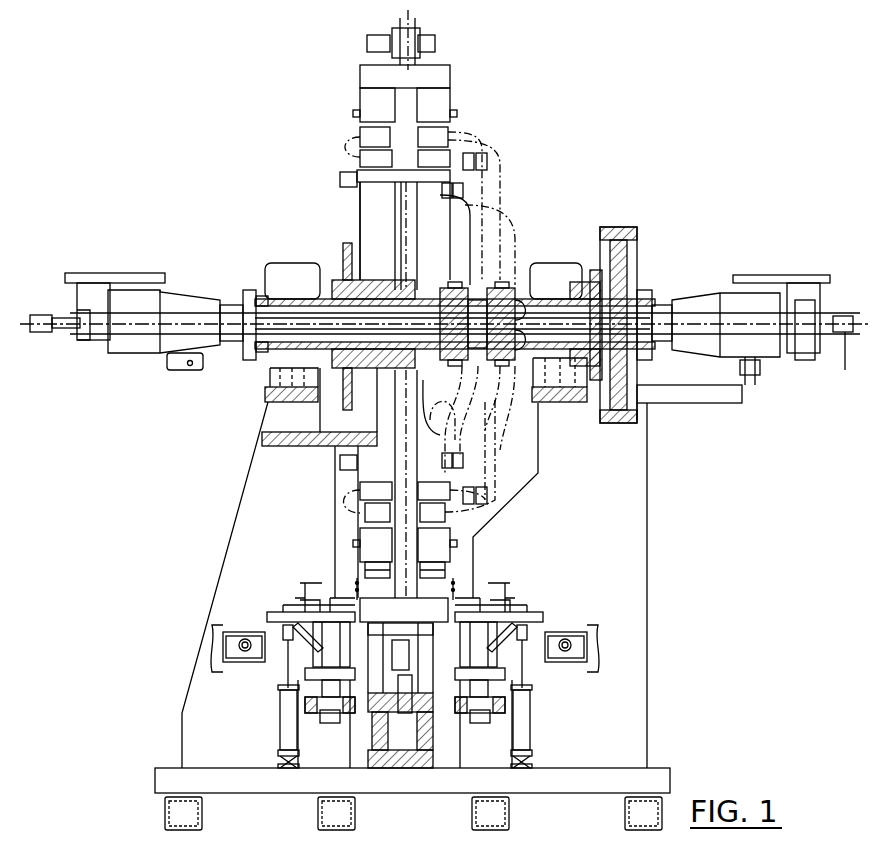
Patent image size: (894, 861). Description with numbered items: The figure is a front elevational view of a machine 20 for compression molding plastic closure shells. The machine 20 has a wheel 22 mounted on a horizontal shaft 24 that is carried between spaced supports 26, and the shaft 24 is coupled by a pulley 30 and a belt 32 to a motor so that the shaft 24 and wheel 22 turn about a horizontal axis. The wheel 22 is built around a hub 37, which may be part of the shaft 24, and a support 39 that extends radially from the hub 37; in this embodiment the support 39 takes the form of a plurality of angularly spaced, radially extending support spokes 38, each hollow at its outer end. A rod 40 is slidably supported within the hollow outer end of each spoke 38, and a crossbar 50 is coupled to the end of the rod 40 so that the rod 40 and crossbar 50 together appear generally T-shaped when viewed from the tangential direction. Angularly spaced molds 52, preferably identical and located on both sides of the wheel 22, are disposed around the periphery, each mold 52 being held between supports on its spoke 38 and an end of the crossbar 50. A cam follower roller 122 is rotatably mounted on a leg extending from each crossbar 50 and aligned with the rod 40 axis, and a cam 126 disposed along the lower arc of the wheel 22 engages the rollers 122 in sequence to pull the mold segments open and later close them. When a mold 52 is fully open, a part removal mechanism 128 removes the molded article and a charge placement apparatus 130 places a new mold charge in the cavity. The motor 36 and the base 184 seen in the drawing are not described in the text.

The machine 20 is at (672, 110).
The wheel 22 is at (480, 104).
The shaft 24 is at (540, 292).
The spaced supports 26 is at (630, 492).
The pulley 30 is at (628, 262).
The belt 32 is at (630, 226).
The motor 36 is at (140, 310).
The hub 37 is at (377, 370).
The support spokes 38 is at (390, 220).
The support 39 is at (392, 207).
The rod 40 is at (445, 212).
The crossbar 50 is at (368, 75).
The molds 52 is at (350, 125).
The cam follower roller 122 is at (412, 31).
The cam 126 is at (398, 688).
The part removal mechanism 128 is at (356, 573).
The charge placement apparatus 130 is at (265, 603).
The base plate 184 is at (612, 780).